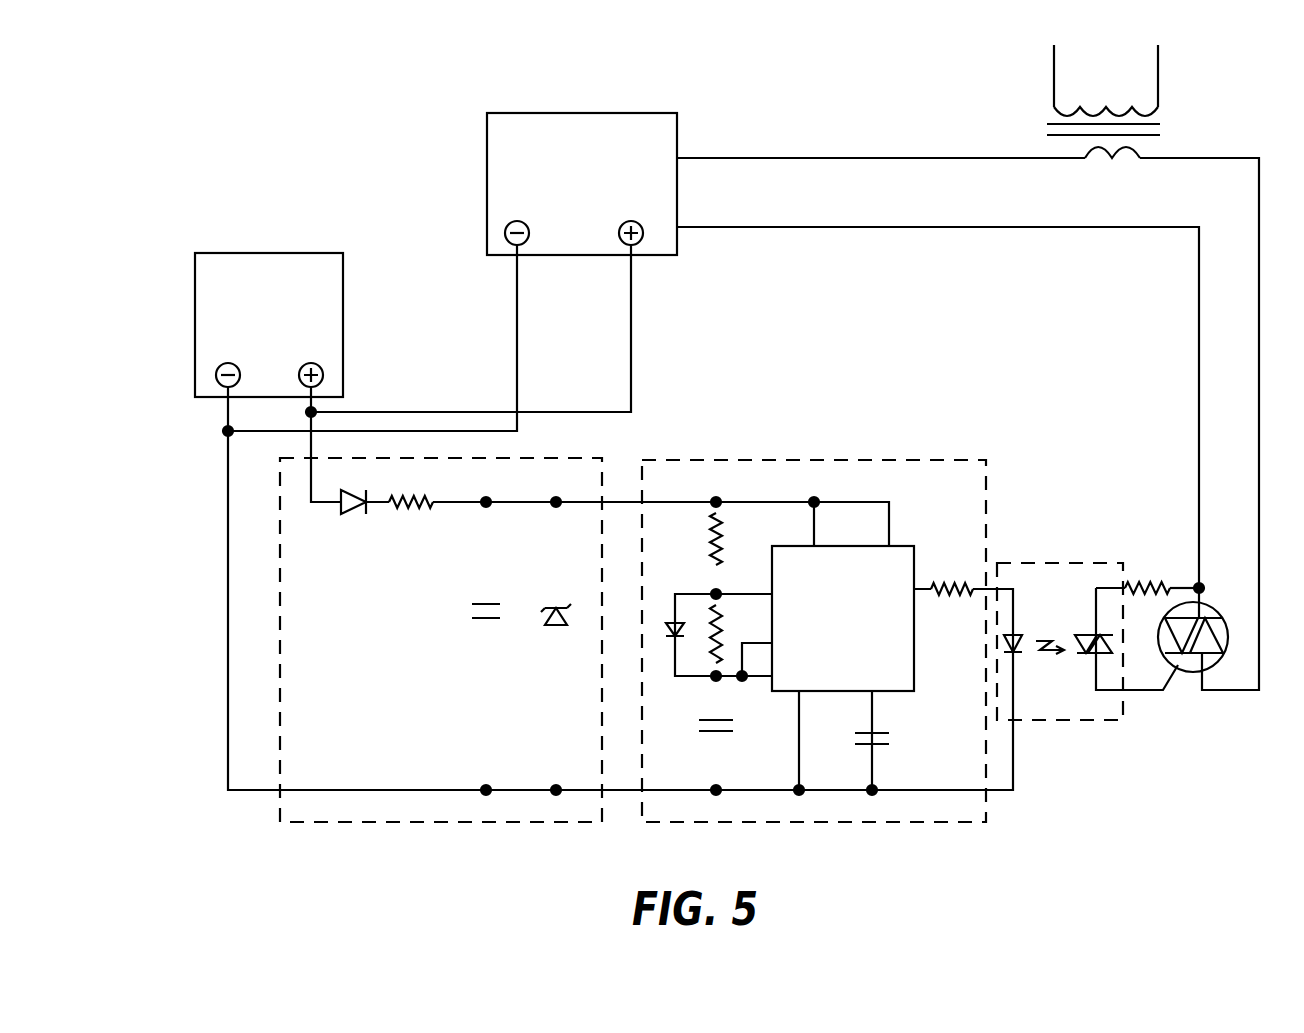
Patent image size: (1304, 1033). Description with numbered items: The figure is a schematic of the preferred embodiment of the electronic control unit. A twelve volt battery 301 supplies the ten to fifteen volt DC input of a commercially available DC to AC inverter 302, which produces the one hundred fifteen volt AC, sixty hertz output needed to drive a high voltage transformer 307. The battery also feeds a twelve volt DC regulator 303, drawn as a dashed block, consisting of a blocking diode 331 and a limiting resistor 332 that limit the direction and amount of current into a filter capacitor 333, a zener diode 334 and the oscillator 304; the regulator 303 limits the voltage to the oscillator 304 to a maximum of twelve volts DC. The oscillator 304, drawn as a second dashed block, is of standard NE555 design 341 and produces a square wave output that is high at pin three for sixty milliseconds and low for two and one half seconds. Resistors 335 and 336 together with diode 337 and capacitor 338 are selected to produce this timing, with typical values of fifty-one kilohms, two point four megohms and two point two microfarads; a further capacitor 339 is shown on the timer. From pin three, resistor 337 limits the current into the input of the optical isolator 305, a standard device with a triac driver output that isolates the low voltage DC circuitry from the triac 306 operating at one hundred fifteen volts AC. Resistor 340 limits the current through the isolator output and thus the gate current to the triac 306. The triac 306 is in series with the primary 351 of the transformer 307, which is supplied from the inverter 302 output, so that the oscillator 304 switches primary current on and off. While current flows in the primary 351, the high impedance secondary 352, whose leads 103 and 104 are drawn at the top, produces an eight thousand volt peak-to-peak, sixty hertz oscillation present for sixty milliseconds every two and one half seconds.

The transformer secondary lead 103 is at (1050, 45).
The transformer secondary lead 104 is at (1163, 50).
The battery 301 is at (257, 256).
The DC to AC inverter 302 is at (492, 148).
The regulator 303 is at (286, 816).
The oscillator 304 is at (948, 818).
The optical isolator 305 is at (1126, 712).
The triac 306 is at (1222, 657).
The high voltage transformer 307 is at (1046, 127).
The blocking diode 331 is at (350, 506).
The limiting resistor 332 is at (452, 541).
The filter capacitor 333 is at (473, 602).
The zener diode 334 is at (542, 617).
The resistor 335 is at (736, 516).
The resistor 336 is at (722, 590).
The diode / resistor 337 is at (672, 632).
The capacitor 338 is at (782, 750).
The capacitor 339 is at (960, 744).
The resistor 340 is at (1170, 532).
The NE555 design 341 is at (857, 546).
The primary 351 is at (1100, 157).
The secondary 352 is at (1262, 115).